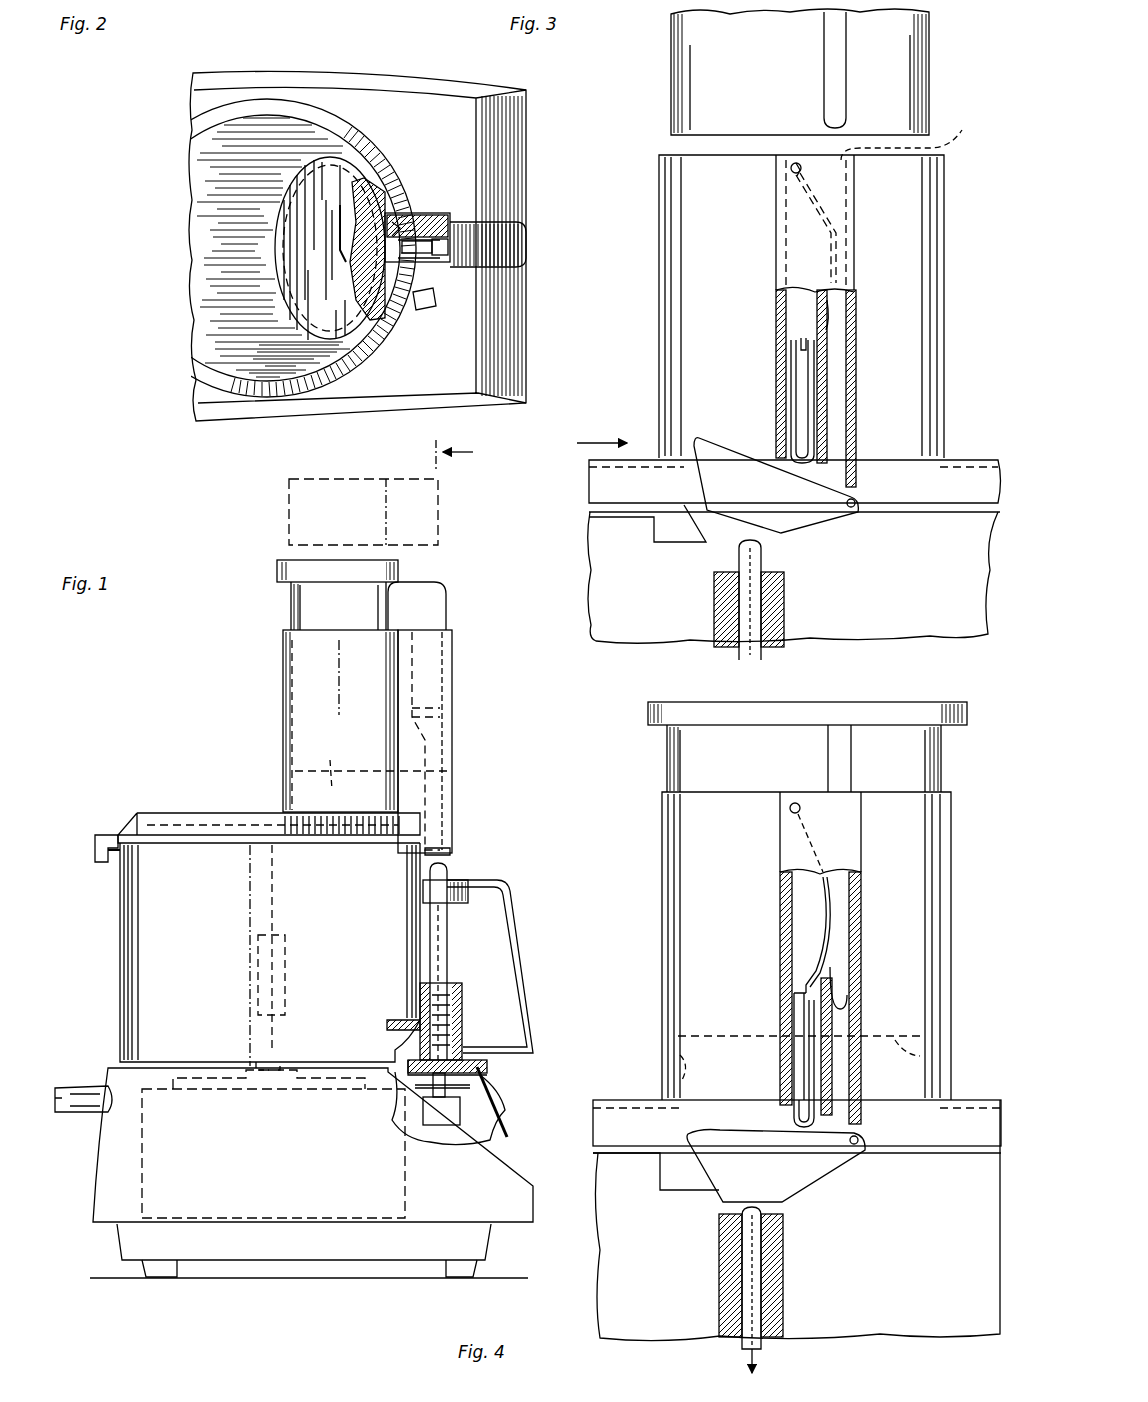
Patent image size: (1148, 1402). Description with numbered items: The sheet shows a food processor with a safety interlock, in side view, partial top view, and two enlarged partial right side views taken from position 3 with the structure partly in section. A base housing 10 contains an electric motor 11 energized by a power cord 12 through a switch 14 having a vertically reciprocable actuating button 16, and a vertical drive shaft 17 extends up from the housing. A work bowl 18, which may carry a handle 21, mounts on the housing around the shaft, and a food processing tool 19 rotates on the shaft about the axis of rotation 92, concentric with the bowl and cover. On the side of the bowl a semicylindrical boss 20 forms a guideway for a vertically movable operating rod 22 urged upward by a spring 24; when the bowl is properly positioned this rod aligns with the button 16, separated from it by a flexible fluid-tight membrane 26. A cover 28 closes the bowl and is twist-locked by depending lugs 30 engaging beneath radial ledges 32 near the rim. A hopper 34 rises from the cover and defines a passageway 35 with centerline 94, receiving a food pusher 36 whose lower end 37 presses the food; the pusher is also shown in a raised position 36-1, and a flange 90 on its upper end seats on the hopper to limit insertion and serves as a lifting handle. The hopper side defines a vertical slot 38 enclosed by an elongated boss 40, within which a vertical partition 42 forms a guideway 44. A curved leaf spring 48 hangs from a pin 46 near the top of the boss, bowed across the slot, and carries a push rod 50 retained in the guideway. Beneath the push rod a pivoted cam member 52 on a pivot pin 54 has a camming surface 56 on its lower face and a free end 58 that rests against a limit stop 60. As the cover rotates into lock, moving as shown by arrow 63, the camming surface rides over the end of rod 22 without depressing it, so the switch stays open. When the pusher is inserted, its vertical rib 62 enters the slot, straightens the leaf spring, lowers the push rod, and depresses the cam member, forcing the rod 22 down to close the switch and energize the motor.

In FIG. 1, the section line 3— 3 is at (444, 917).
In FIG. 2, the base housing 10 is at (438, 76).
In FIG. 1, the base housing 10 is at (277, 1266).
In FIG. 1, the electric motor 11 is at (405, 1186).
In FIG. 1, the power cord 12 is at (70, 1086).
In FIG. 1, the switch 14 is at (448, 1112).
In FIG. 1, the actuating button 16 is at (487, 1068).
In FIG. 1, the drive shaft 17 is at (254, 1035).
In FIG. 2, the work bowl 18 is at (318, 98).
In FIG. 1, the work bowl 18 is at (118, 977).
In FIG. 3, the work bowl 18 is at (590, 628).
In FIG. 4, the work bowl 18 is at (907, 1310).
In FIG. 1, the food processing tool 19 is at (258, 812).
In FIG. 1, the semicylindrical boss 20 is at (450, 965).
In FIG. 3, the semicylindrical boss 20 is at (739, 605).
In FIG. 4, the semicylindrical boss 20 is at (778, 1235).
In FIG. 2, the handle 21 is at (505, 225).
In FIG. 1, the handle 21 is at (520, 925).
In FIG. 1, the operating rod 22 is at (450, 868).
In FIG. 3, the operating rod 22 is at (785, 610).
In FIG. 4, the operating rod 22 is at (785, 1278).
In FIG. 1, the spring 24 is at (455, 1000).
In FIG. 1, the membrane 26 is at (480, 1057).
In FIG. 2, the cover 28 is at (210, 348).
In FIG. 1, the cover 28 is at (190, 812).
In FIG. 3, the cover 28 is at (968, 460).
In FIG. 4, the cover 28 is at (970, 1100).
In FIG. 1, the depending lugs 30 is at (104, 862).
In FIG. 1, the radial ledges 32 is at (108, 835).
In FIG. 2, the hopper 34 is at (293, 193).
In FIG. 1, the hopper 34 is at (290, 705).
In FIG. 3, the hopper 34 is at (670, 335).
In FIG. 4, the hopper 34 is at (665, 910).
In FIG. 2, the passageway 35 is at (288, 232).
In FIG. 1, the passageway 35 is at (292, 770).
In FIG. 4, the passageway 35 is at (680, 1063).
In FIG. 2, the food pusher 36 is at (296, 274).
In FIG. 1, the food pusher 36 is at (300, 605).
In FIG. 3, the food pusher 36 is at (698, 78).
In FIG. 4, the food pusher 36 is at (680, 758).
In FIG. 1, the pusher raised position 36-1 is at (289, 502).
In FIG. 1, the lower end of the pusher 37 is at (330, 762).
In FIG. 4, the lower end of the pusher 37 is at (940, 1050).
In FIG. 2, the vertical slot 38 is at (364, 262).
In FIG. 3, the vertical slot 38 is at (952, 134).
In FIG. 2, the elongated boss 40 is at (420, 213).
In FIG. 1, the elongated boss 40 is at (453, 690).
In FIG. 3, the elongated boss 40 is at (776, 240).
In FIG. 4, the elongated boss 40 is at (862, 842).
In FIG. 3, the vertical partition 42 is at (833, 380).
In FIG. 4, the vertical partition 42 is at (832, 1025).
In FIG. 3, the vertical guideway 44 is at (796, 380).
In FIG. 4, the vertical guideway 44 is at (800, 1040).
In FIG. 3, the pin 46 is at (790, 170).
In FIG. 4, the pin 46 is at (790, 812).
In FIG. 2, the leaf spring 48 is at (440, 256).
In FIG. 1, the leaf spring 48 is at (455, 716).
In FIG. 3, the leaf spring 48 is at (840, 243).
In FIG. 4, the leaf spring 48 is at (828, 900).
In FIG. 1, the push rod 50 is at (453, 780).
In FIG. 3, the push rod 50 is at (814, 420).
In FIG. 4, the push rod 50 is at (800, 1065).
In FIG. 2, the pivoted cam member 52 is at (425, 308).
In FIG. 1, the pivoted cam member 52 is at (452, 850).
In FIG. 3, the pivoted cam member 52 is at (715, 440).
In FIG. 4, the pivoted cam member 52 is at (830, 1170).
In FIG. 3, the pivot pin 54 is at (858, 503).
In FIG. 4, the pivot pin 54 is at (862, 1140).
In FIG. 3, the camming surface 56 is at (822, 530).
In FIG. 3, the free end 58 is at (700, 483).
In FIG. 4, the free end 58 is at (700, 1178).
In FIG. 3, the limit stop 60 is at (676, 538).
In FIG. 4, the limit stop 60 is at (670, 1175).
In FIG. 2, the vertical rib 62 is at (402, 226).
In FIG. 1, the vertical rib 62 is at (436, 596).
In FIG. 3, the vertical rib 62 is at (836, 58).
In FIG. 4, the vertical rib 62 is at (840, 750).
In FIG. 3, the arrow 63 is at (594, 443).
In FIG. 1, the flange 90 is at (277, 572).
In FIG. 4, the flange 90 is at (648, 712).
In FIG. 2, the axis of rotation 92 is at (268, 248).
In FIG. 1, the axis of rotation 92 is at (270, 887).
In FIG. 2, the centerline 94 is at (340, 250).
In FIG. 1, the centerline 94 is at (336, 650).